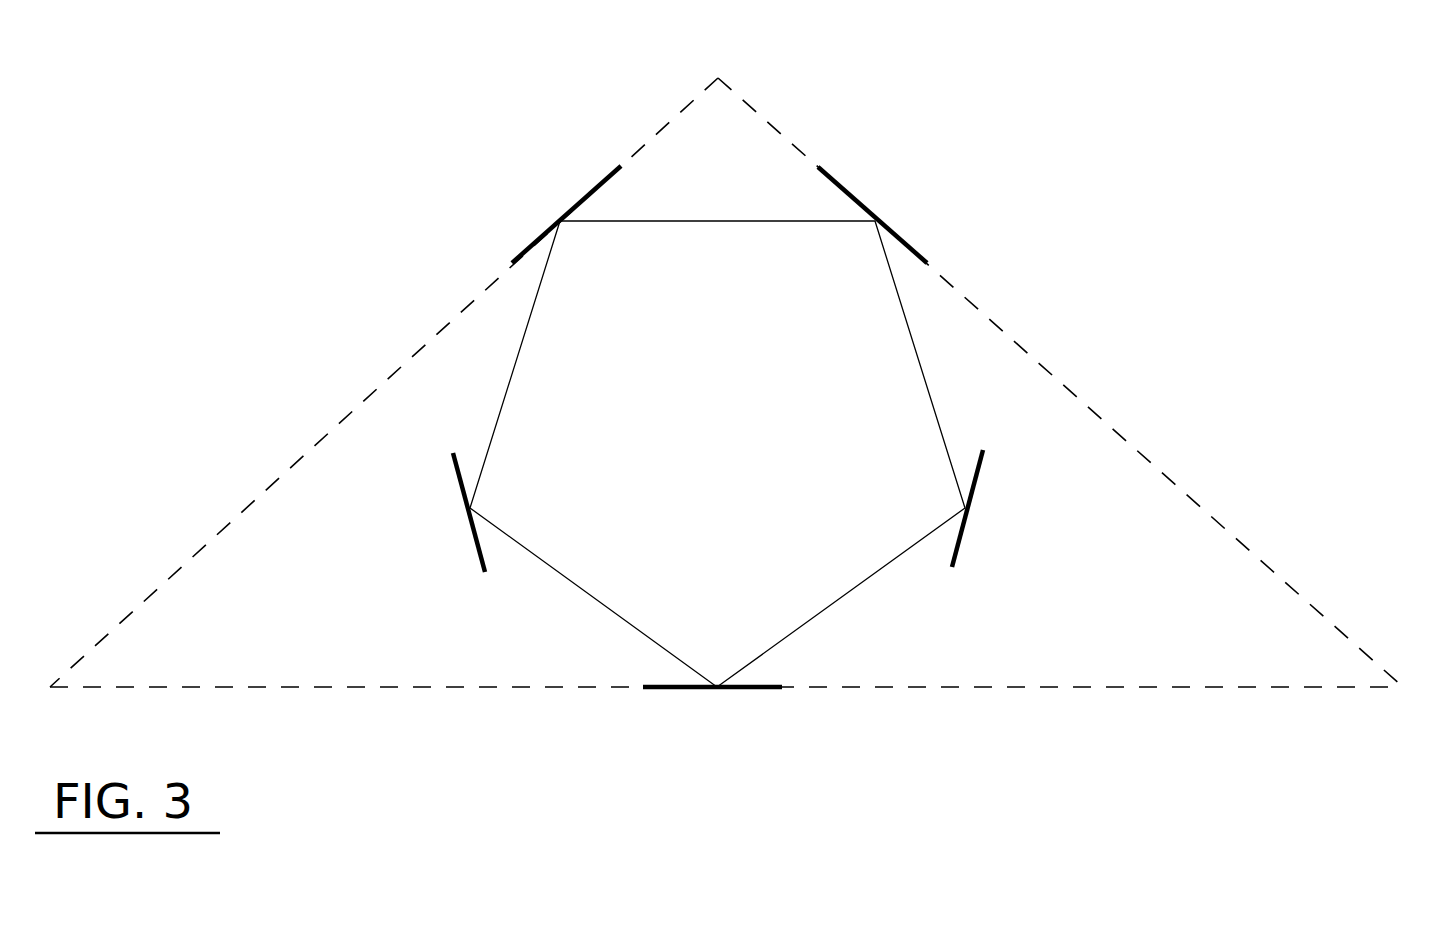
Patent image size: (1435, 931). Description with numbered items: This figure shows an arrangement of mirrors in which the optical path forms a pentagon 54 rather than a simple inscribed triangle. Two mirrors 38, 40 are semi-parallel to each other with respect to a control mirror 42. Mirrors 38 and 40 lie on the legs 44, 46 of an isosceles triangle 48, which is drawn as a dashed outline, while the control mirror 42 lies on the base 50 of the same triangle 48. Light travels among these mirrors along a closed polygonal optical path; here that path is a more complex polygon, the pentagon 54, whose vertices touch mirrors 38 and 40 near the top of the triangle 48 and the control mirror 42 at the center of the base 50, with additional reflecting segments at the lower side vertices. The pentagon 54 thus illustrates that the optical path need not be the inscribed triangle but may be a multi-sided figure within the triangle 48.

The mirror 38 is at (538, 233).
The mirror 40 is at (845, 188).
The control mirror 42 is at (730, 688).
The leg 44 is at (240, 517).
The leg 46 is at (1068, 400).
The isosceles triangle 48 is at (726, 448).
The base 50 is at (1062, 685).
The pentagon 54 is at (863, 577).